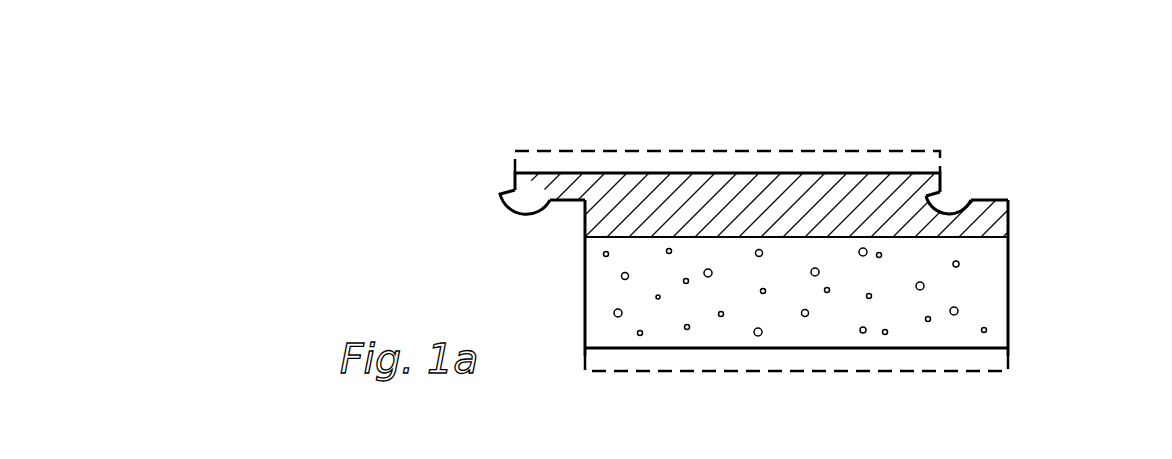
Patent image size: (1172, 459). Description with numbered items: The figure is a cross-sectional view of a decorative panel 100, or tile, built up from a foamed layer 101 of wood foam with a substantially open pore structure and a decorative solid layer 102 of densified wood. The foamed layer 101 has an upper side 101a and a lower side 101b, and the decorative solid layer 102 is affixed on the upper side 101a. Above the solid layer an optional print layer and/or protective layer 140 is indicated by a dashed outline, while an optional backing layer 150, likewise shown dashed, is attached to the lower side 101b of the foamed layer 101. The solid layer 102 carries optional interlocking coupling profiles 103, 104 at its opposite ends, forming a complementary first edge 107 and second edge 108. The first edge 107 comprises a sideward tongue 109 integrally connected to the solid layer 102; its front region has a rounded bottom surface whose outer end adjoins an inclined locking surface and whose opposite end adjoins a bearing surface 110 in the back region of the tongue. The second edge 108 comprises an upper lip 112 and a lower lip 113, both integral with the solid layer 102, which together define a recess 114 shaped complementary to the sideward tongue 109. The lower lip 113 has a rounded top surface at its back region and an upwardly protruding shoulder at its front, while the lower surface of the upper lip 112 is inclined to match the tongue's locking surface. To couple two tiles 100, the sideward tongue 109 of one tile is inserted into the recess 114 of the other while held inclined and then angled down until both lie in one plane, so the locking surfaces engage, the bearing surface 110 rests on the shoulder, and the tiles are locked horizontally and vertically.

The decorative panel 100 is at (515, 114).
The foamed layer 101 is at (982, 299).
The upper side 101a is at (723, 237).
The lower side 101b is at (715, 359).
The decorative solid layer 102 is at (835, 203).
The interlocking coupling profile 103 is at (490, 222).
The interlocking coupling profile 104 is at (980, 160).
The first edge 107 is at (462, 167).
The second edge 108 is at (990, 111).
The sideward tongue 109 is at (522, 213).
The bearing surface 110 is at (572, 202).
The upper lip 112 is at (942, 185).
The lower lip 113 is at (953, 215).
The recess 114 is at (948, 205).
The protective layer 140 is at (615, 160).
The backing layer 150 is at (1000, 360).